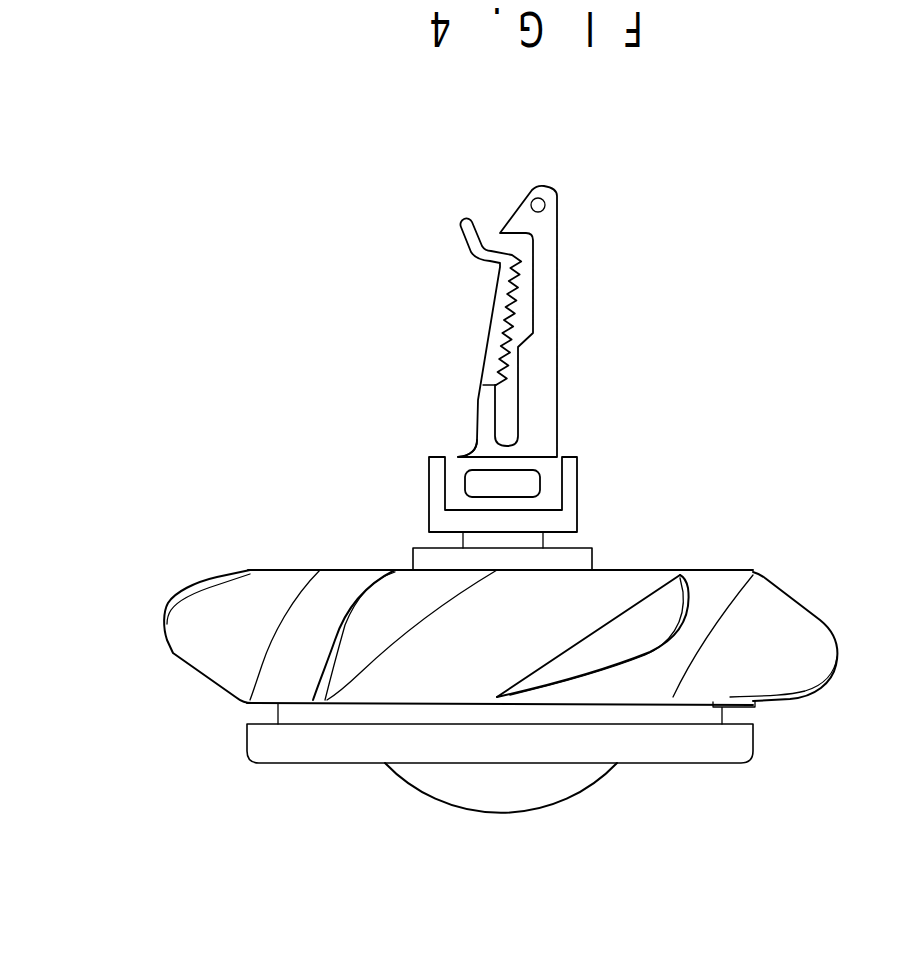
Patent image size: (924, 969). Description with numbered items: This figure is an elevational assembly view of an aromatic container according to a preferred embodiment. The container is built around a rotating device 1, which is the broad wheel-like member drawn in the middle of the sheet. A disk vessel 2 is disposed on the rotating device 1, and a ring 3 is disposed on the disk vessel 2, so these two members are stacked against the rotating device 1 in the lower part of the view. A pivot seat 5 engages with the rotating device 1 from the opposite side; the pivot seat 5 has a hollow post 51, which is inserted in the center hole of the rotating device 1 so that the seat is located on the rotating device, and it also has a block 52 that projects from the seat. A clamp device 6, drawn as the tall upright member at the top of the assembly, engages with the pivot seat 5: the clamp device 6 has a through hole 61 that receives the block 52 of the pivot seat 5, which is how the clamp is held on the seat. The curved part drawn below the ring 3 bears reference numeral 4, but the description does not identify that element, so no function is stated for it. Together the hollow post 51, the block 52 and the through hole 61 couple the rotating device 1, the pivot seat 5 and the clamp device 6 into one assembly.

The rotating device 1 is at (265, 668).
The disk vessel 2 is at (713, 718).
The ring 3 is at (342, 752).
The dome / bearing cap 4 is at (562, 792).
The pivot seat 5 is at (433, 493).
The hollow post 51 is at (470, 542).
The block 52 is at (527, 483).
The clamp device 6 is at (545, 316).
The through hole 61 is at (470, 470).